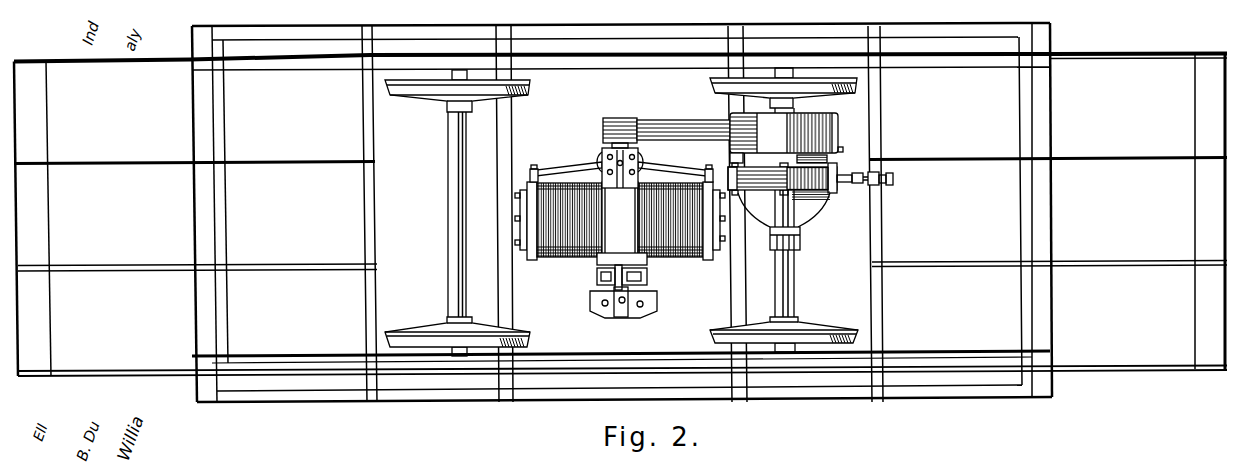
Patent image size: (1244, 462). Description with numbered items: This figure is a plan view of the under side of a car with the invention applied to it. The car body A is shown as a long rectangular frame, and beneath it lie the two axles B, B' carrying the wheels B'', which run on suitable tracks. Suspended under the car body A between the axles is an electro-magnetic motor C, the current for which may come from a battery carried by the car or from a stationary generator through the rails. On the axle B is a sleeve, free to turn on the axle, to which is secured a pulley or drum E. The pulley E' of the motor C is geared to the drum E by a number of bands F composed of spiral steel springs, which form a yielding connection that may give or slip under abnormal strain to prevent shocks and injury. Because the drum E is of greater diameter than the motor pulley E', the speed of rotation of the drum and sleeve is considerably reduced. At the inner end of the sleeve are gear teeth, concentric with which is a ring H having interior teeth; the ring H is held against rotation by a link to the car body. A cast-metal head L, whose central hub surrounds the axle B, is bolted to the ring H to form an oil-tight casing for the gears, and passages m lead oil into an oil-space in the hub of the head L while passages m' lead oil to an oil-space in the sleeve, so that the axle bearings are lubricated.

The car body A is at (620, 215).
The axle B is at (797, 212).
The axle B' is at (441, 214).
The wheels B'' is at (621, 212).
The electro-magnetic motor C is at (620, 233).
The pulley or drum E is at (726, 141).
The motor pulley E' is at (620, 121).
The bands F is at (683, 119).
The ring H is at (810, 181).
The cast-metal head L is at (820, 199).
The passages m is at (778, 161).
The passages m' is at (786, 133).